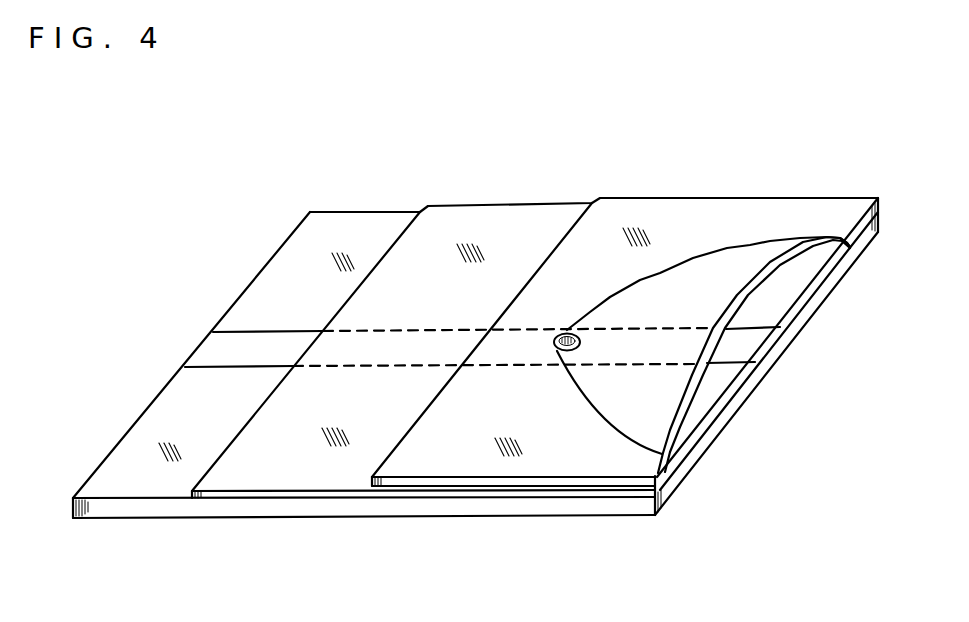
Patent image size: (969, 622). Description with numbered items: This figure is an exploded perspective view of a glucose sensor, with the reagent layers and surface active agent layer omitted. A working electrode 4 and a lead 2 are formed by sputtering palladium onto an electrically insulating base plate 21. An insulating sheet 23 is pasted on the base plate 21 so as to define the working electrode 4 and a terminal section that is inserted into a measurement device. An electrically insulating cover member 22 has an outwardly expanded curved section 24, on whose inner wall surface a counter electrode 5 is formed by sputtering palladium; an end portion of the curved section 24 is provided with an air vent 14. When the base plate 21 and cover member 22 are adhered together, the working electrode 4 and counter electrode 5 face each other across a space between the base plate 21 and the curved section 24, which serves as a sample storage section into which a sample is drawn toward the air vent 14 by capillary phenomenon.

The lead 2 is at (222, 352).
The working electrode 4 is at (757, 347).
The counter electrode 5 is at (697, 402).
The air vent 14 is at (567, 330).
The base plate 21 is at (347, 235).
The cover member 22 is at (680, 218).
The insulating sheet 23 is at (290, 478).
The curved section 24 is at (752, 260).